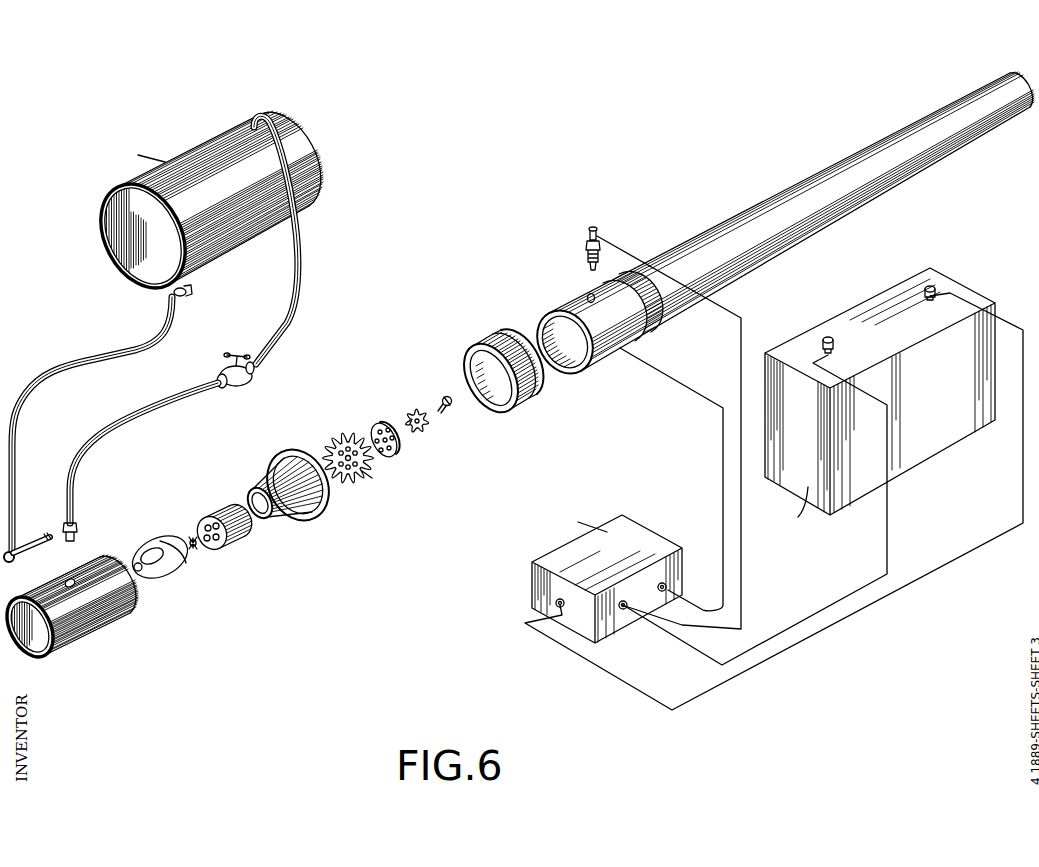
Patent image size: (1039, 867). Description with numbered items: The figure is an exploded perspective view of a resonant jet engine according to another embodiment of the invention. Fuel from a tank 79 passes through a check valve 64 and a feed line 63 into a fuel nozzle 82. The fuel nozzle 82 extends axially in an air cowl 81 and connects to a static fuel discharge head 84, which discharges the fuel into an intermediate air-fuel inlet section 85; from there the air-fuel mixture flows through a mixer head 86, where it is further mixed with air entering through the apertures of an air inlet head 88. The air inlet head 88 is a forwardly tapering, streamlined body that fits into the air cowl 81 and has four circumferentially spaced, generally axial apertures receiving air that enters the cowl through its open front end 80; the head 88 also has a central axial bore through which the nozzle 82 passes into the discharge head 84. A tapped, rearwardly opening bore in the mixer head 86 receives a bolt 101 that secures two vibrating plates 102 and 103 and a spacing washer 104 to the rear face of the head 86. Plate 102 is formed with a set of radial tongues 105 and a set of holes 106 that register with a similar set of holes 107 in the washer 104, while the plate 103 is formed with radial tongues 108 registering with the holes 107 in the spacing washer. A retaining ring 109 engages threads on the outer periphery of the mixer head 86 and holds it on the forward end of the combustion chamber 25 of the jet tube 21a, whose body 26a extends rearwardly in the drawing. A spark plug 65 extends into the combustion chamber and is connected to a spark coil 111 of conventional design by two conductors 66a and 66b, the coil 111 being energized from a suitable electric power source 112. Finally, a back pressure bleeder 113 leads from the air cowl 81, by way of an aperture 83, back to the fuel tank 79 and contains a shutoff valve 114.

The tank 79 is at (211, 144).
The check valve 64 is at (184, 293).
The feed line 63 is at (92, 356).
The shutoff valve 114 is at (242, 386).
The back pressure bleeder 113 is at (133, 429).
The fuel nozzle 82 is at (47, 535).
The aperture 83 is at (75, 576).
The open front end 80 is at (35, 646).
The air cowl 81 is at (107, 635).
The air inlet head 88 is at (175, 577).
The static fuel discharge head 84 is at (196, 548).
The intermediate air-fuel inlet section 85 is at (238, 543).
The mixer head 86 is at (307, 522).
The vibrating plate 102 is at (362, 421).
The vibrating plate 103 is at (426, 410).
The bolt 101 is at (443, 411).
The radial tongues 108 is at (421, 430).
The spacing washer 104 is at (393, 450).
The holes 107 is at (388, 455).
The radial tongues 105 is at (370, 477).
The holes 106 is at (357, 482).
The retaining ring 109 is at (493, 334).
The combustion chamber 25 is at (567, 302).
The spark plug 65 is at (584, 253).
The jet tube 21a is at (690, 223).
The flame tube 26a is at (862, 150).
The conductor 66a is at (737, 298).
The conductor 66b is at (688, 397).
The electric power source 112 is at (930, 447).
The spark coil 111 is at (643, 533).